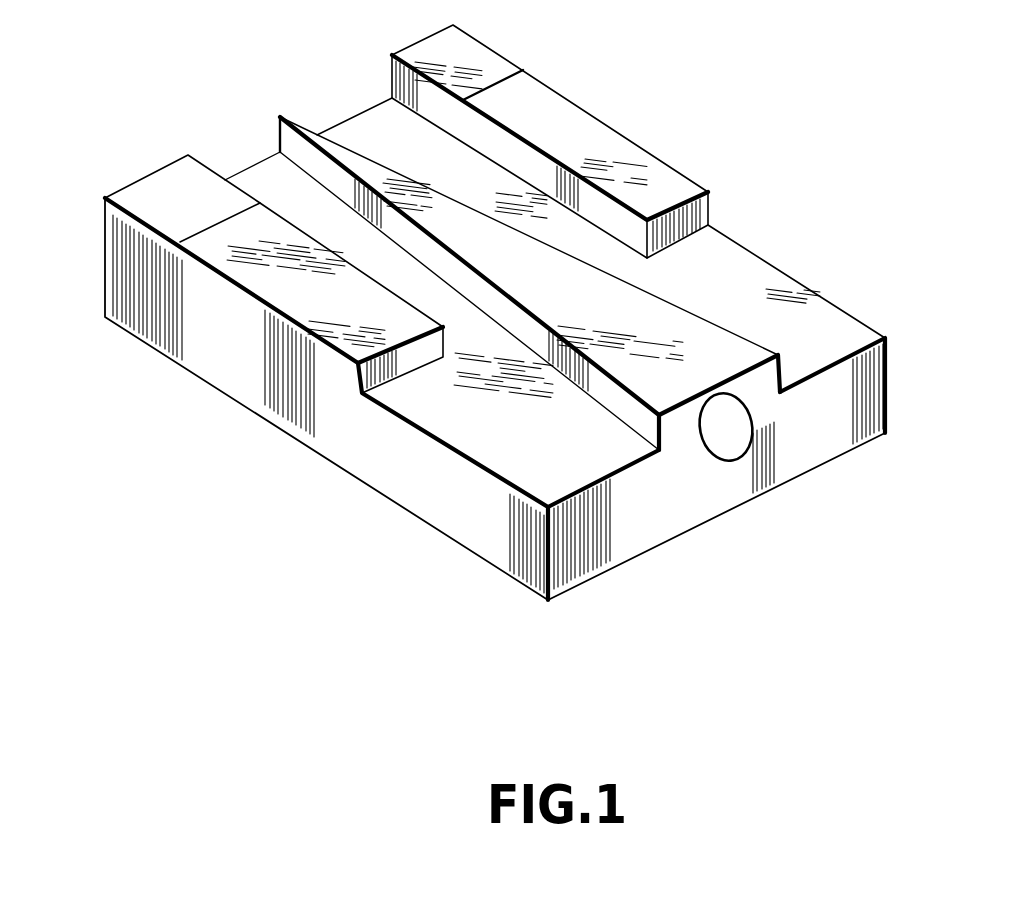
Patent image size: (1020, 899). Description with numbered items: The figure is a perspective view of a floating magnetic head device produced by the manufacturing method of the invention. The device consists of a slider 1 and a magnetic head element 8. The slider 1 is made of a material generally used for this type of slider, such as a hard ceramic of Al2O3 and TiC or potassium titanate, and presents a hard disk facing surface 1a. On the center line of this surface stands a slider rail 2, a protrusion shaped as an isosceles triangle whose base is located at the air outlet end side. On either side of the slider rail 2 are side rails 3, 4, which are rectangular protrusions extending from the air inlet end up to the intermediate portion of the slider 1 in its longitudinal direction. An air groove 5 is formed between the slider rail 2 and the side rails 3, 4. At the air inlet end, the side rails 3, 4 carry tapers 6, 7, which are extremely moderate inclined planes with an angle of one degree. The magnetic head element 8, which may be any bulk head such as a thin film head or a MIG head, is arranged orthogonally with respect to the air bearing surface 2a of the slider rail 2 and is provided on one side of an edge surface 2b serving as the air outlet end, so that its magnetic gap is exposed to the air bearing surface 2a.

The slider 1 is at (827, 440).
The hard disk facing surface 1a is at (830, 332).
The slider rail 2 is at (690, 342).
The air bearing surface 2a is at (658, 362).
The edge surface 2b is at (762, 388).
The side rail 3 is at (652, 174).
The side rail 4 is at (290, 291).
The air groove 5 is at (484, 433).
The taper 6 is at (493, 65).
The taper 7 is at (160, 205).
The magnetic head element 8 is at (728, 445).